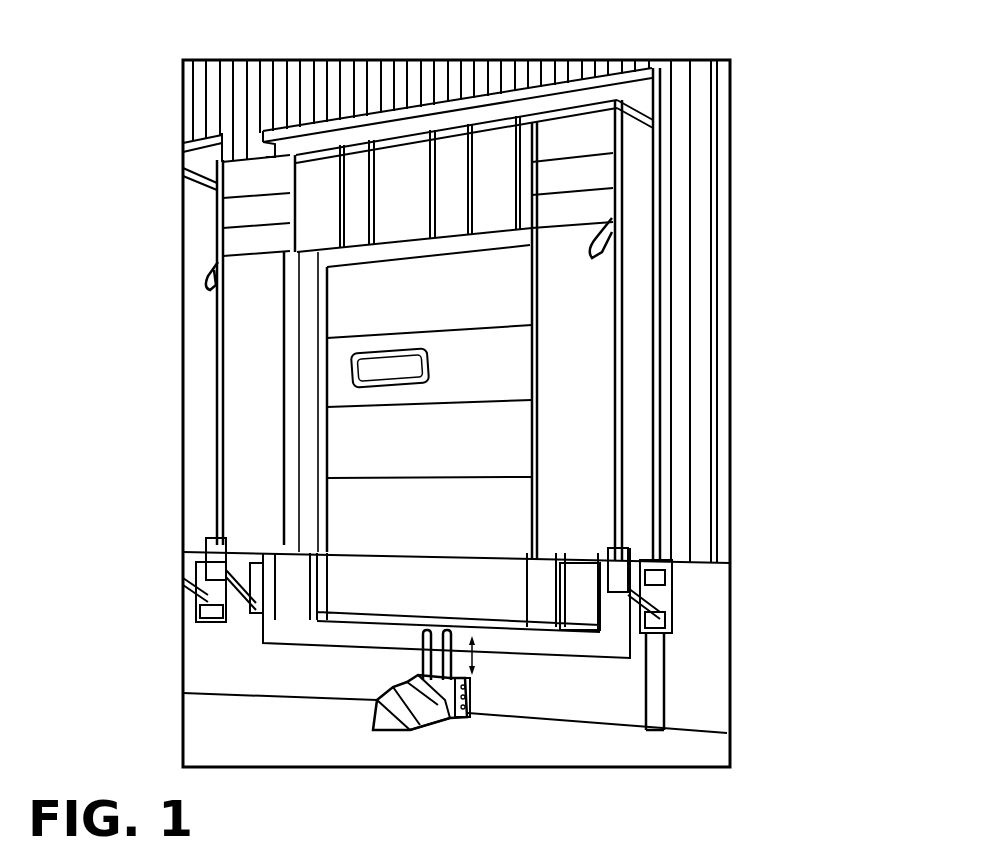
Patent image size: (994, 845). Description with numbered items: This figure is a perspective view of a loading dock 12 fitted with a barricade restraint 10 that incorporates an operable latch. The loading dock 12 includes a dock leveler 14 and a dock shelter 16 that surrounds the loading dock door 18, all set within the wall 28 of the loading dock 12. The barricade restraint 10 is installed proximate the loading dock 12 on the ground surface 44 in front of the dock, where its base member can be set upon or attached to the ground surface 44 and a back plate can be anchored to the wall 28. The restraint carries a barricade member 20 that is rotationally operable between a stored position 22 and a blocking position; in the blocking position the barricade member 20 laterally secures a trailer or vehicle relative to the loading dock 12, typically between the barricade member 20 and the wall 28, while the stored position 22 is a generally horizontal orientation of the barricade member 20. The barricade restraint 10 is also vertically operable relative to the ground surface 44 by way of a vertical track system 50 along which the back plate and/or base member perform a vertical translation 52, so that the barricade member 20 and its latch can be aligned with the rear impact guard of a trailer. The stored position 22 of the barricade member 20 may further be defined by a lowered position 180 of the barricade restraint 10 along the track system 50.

The barricade restraint 10 is at (452, 672).
The loading dock 12 is at (683, 265).
The dock leveler 14 is at (430, 538).
The dock shelter 16 is at (310, 133).
The loading dock door 18 is at (475, 428).
The barricade member 20 is at (377, 702).
The stored position 22 is at (472, 720).
The wall 28 is at (693, 665).
The ground surface 44 is at (228, 730).
The vertical track system 50 is at (410, 630).
The vertical translation 52 is at (468, 658).
The lowered position 180 is at (430, 732).